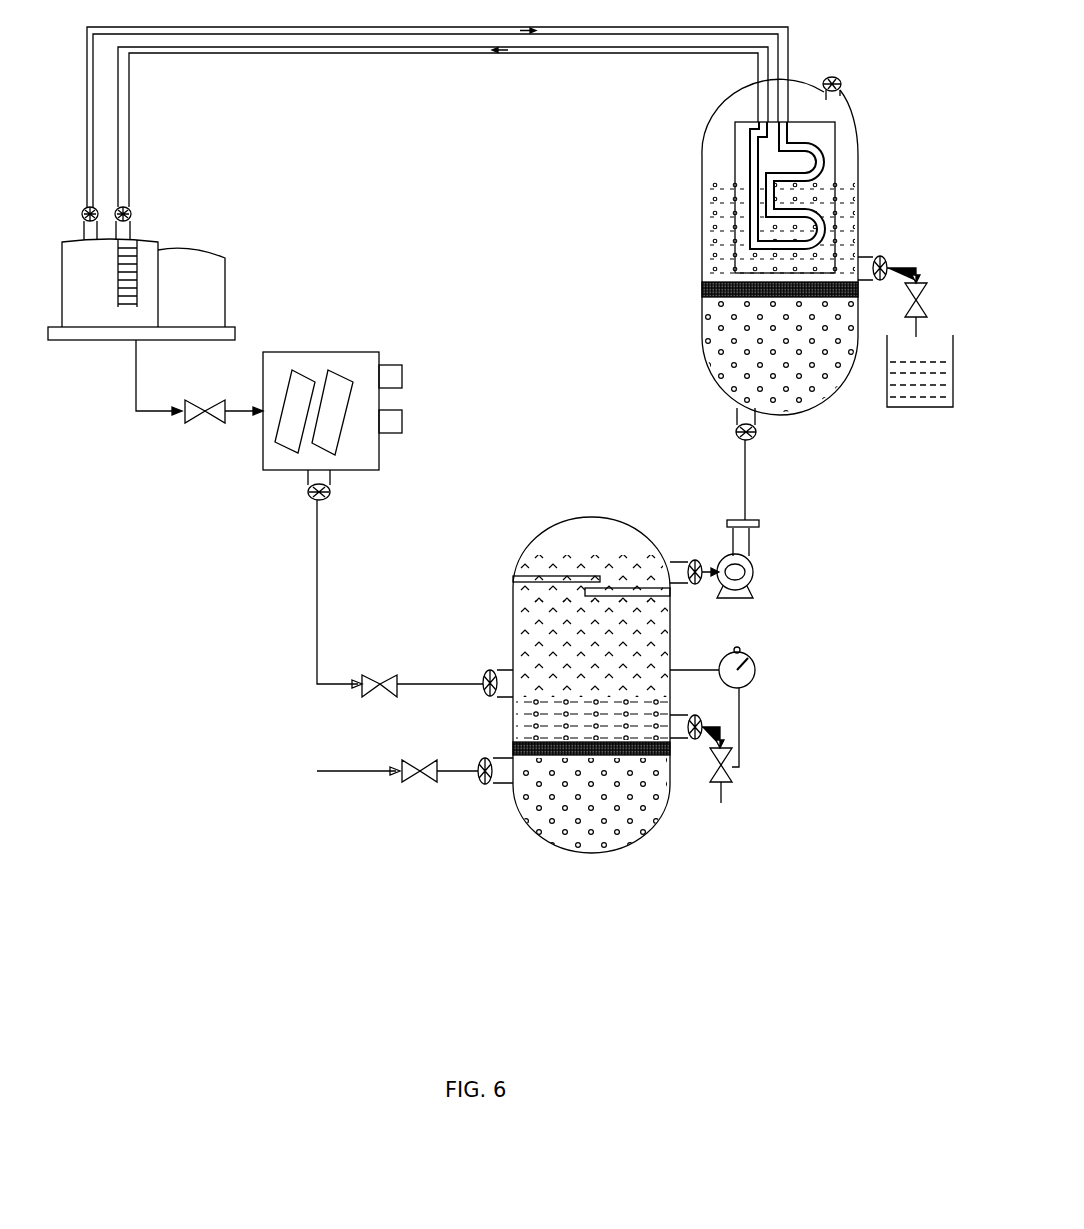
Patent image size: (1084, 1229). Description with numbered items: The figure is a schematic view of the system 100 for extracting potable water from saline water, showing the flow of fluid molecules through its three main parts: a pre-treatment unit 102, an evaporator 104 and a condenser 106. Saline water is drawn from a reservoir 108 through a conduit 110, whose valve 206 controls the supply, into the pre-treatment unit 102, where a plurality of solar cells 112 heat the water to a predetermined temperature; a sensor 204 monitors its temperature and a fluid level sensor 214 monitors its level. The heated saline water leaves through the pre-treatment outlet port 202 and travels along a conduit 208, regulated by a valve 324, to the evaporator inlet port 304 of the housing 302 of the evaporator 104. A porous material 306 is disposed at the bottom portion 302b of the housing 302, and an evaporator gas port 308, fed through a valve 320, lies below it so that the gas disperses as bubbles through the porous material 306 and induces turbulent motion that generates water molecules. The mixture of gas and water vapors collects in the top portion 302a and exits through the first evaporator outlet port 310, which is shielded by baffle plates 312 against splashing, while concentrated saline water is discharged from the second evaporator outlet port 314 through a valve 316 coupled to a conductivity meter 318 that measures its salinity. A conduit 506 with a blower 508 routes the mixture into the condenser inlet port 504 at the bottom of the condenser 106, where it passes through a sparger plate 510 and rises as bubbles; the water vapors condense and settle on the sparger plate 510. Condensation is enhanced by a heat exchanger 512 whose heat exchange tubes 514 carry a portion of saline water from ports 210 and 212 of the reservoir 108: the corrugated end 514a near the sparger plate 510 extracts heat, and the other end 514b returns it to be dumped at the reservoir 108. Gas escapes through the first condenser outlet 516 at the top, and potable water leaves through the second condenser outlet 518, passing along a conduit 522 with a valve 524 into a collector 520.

The system 100 is at (506, 530).
The pre-treatment unit 102 is at (337, 453).
The evaporator 104 is at (611, 707).
The condenser 106 is at (794, 236).
The reservoir 108 is at (166, 254).
The conduit 110 is at (143, 417).
The solar cells 112 is at (290, 430).
The pre-treatment outlet port 202 is at (312, 497).
The sensor 204 is at (395, 435).
The valve 206 is at (200, 420).
The conduit 208 is at (317, 640).
The port 210 is at (84, 214).
The port 212 is at (132, 222).
The fluid level sensor 214 is at (395, 390).
The housing 302 is at (611, 707).
The top portion 302a is at (513, 598).
The bottom portion 302b is at (640, 842).
The evaporator inlet port 304 is at (487, 672).
The porous material 306 is at (513, 748).
The evaporator gas port 308 is at (493, 785).
The first evaporator outlet port 310 is at (672, 560).
The baffle plates 312 is at (515, 576).
The second evaporator outlet port 314 is at (735, 728).
The valve 316 is at (735, 778).
The conductivity meter 318 is at (745, 655).
The valve 320 is at (425, 784).
The valve 324 is at (385, 678).
The condenser inlet port 504 is at (738, 412).
The conduit 506 is at (745, 458).
The blower 508 is at (755, 572).
The sparger plate 510 is at (710, 278).
The heat exchanger 512 is at (838, 140).
The heat exchange tubes 514 is at (597, 55).
The end 514a is at (745, 200).
The other end 514b is at (130, 216).
The first condenser outlet 516 is at (845, 82).
The second condenser outlet 518 is at (882, 262).
The collector 520 is at (935, 410).
The conduit 522 is at (935, 250).
The valve 524 is at (925, 308).